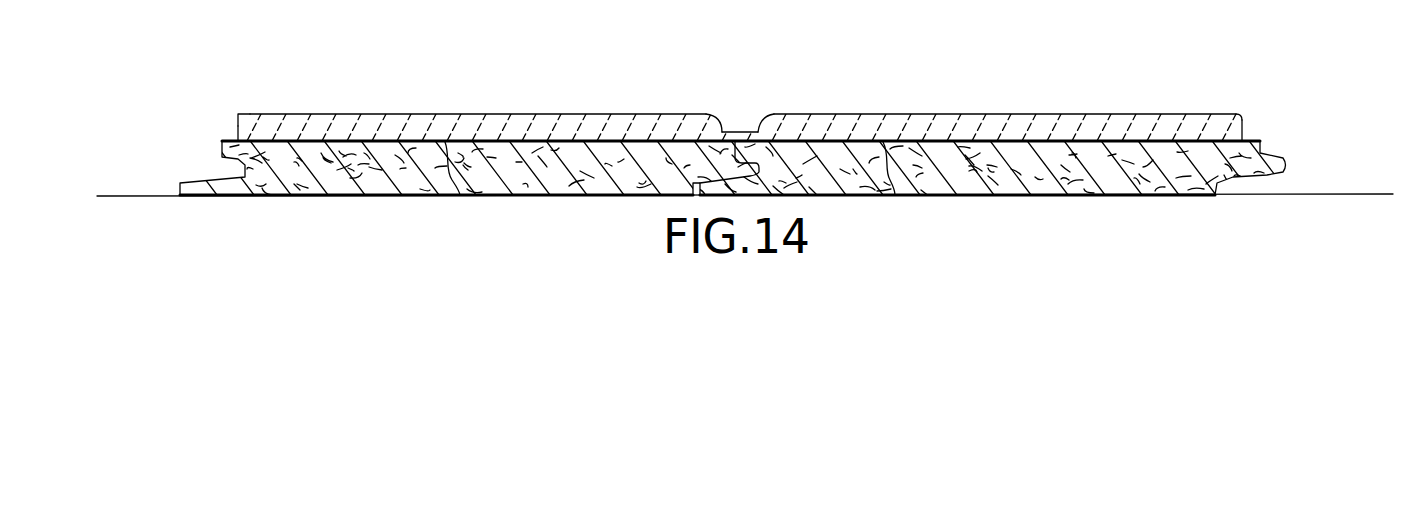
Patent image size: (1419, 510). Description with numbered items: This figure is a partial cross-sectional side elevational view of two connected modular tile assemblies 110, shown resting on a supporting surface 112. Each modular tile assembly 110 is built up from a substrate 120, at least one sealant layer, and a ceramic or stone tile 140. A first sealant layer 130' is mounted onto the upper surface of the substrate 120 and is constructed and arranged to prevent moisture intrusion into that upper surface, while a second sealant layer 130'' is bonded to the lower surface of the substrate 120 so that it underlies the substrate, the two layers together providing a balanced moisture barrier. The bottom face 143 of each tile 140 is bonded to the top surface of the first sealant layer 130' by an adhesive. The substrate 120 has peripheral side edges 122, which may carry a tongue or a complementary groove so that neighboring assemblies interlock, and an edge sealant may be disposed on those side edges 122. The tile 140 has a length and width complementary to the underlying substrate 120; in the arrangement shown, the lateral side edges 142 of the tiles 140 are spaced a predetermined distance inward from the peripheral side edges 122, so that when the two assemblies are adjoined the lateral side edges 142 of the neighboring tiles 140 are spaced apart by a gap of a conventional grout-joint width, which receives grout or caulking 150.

The modular tile assembly 110 is at (735, 153).
The subfloor surface 112 is at (1367, 193).
The substrate 120 is at (378, 177).
The peripheral side edges 122 is at (222, 147).
The first sealant layer 130' is at (676, 199).
The second sealant layer 130'' is at (756, 208).
The ceramic or stone tile 140 is at (492, 115).
The lateral side edges 142 is at (237, 128).
The bottom face 143 is at (240, 130).
The grout or caulking 150 is at (732, 130).